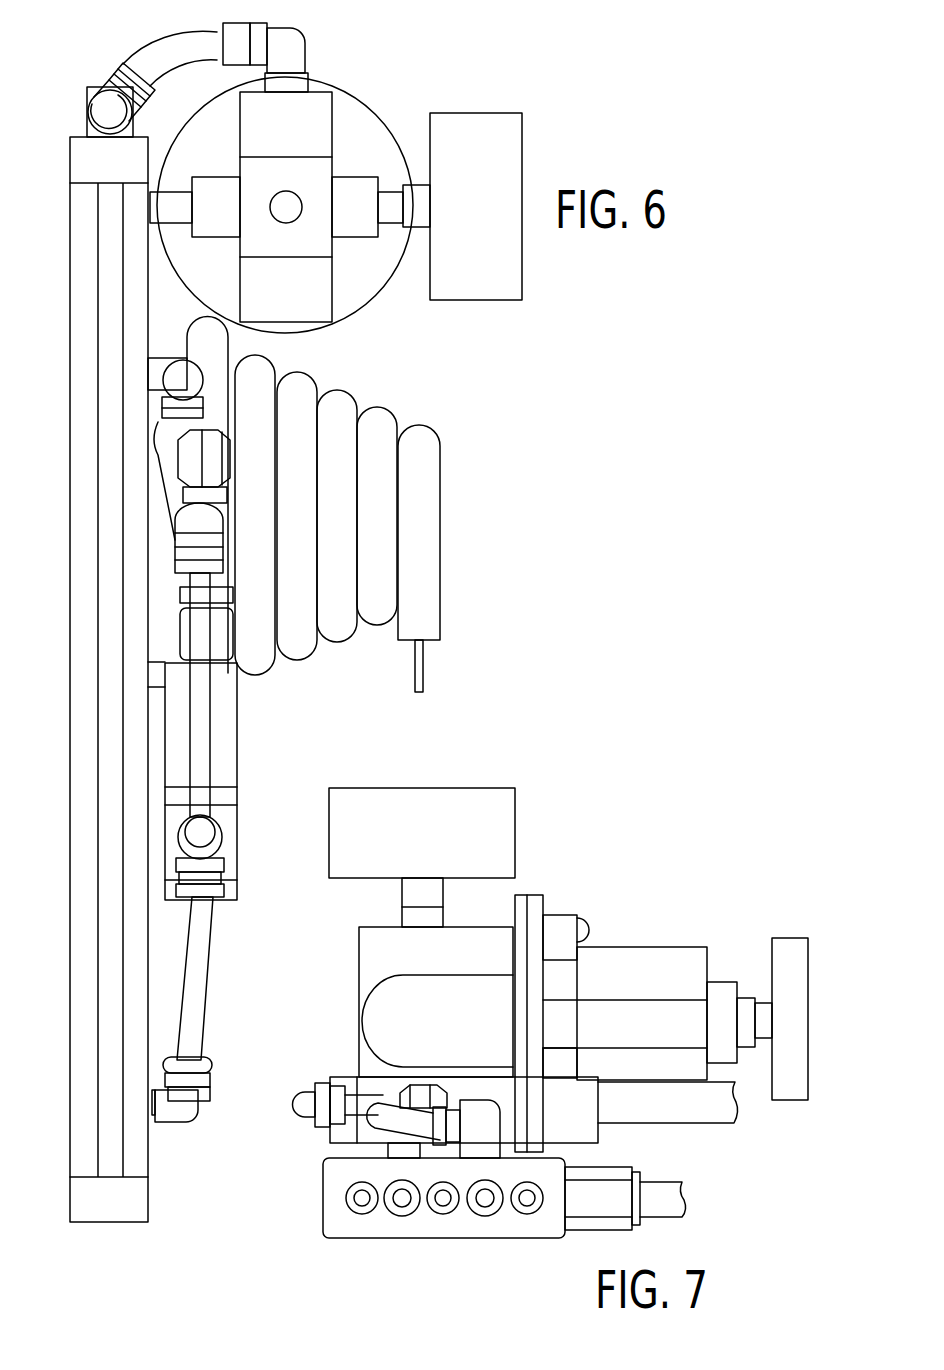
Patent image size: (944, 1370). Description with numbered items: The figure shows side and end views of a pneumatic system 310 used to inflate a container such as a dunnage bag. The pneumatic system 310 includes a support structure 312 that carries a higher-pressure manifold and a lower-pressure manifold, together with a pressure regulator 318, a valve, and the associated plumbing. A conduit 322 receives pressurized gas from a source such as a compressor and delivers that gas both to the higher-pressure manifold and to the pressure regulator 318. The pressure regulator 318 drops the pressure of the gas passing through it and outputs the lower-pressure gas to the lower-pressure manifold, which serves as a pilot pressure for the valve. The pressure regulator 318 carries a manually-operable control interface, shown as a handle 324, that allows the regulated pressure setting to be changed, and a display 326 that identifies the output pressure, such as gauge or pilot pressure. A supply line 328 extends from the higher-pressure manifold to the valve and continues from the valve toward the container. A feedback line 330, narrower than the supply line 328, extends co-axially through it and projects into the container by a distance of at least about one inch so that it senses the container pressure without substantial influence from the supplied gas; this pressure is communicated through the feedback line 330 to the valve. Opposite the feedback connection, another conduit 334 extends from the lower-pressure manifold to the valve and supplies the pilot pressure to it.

In FIG. 6, the pneumatic system 310 is at (483, 72).
In FIG. 7, the pneumatic system 310 is at (665, 812).
In FIG. 6, the support structure 312 is at (150, 1198).
In FIG. 7, the support structure 312 is at (367, 1232).
In FIG. 6, the pressure regulator 318 is at (358, 100).
In FIG. 7, the conduit 322 is at (663, 1185).
In FIG. 7, the handle 324 is at (790, 938).
In FIG. 6, the display 326 is at (522, 143).
In FIG. 7, the display 326 is at (505, 787).
In FIG. 6, the supply line 328 is at (440, 580).
In FIG. 7, the supply line 328 is at (327, 1133).
In FIG. 6, the feedback line 330 is at (425, 668).
In FIG. 6, the conduit 334 is at (160, 457).